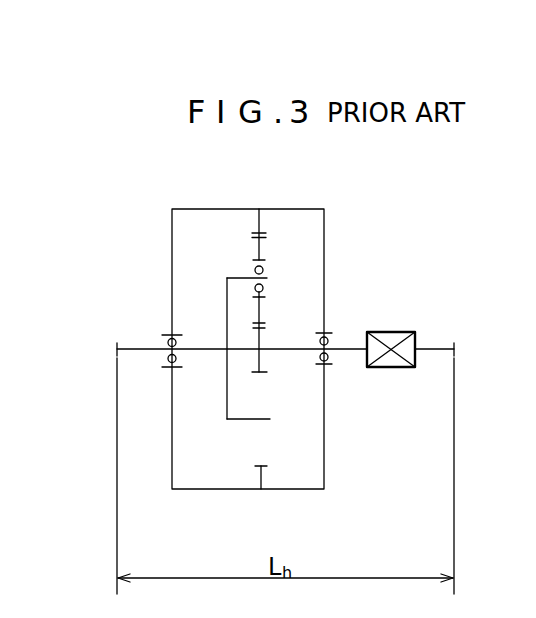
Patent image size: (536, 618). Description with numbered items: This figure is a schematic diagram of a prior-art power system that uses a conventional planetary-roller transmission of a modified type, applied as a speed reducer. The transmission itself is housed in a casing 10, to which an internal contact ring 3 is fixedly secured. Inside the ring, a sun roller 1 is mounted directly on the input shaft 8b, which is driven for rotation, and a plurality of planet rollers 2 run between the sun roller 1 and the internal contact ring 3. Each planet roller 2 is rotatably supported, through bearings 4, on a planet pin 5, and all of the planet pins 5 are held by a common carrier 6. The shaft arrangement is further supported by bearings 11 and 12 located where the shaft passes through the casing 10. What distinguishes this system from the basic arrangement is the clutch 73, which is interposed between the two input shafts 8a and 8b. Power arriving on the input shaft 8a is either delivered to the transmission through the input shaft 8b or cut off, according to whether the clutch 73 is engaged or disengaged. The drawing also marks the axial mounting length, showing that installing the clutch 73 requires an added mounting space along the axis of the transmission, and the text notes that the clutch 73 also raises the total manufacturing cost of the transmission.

The sun roller 1 is at (260, 362).
The planet rollers 2 is at (260, 247).
The internal contact ring 3 is at (258, 478).
The bearings 4 is at (264, 270).
The planet pins 5 is at (240, 278).
The carrier 6 is at (227, 320).
The input shaft 8a is at (437, 348).
The input shaft 8b is at (348, 348).
The casing 10 is at (283, 490).
The bearing 11 is at (328, 357).
The bearing 12 is at (166, 341).
The clutch 73 is at (388, 332).